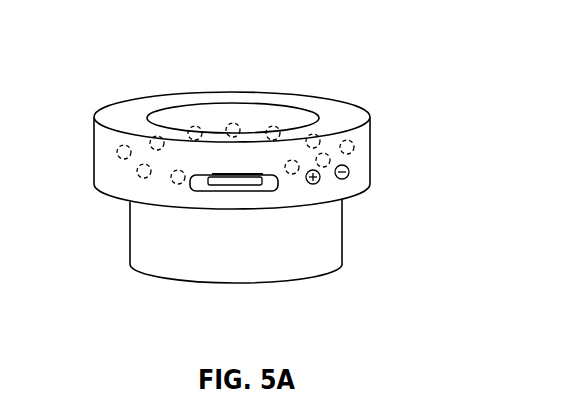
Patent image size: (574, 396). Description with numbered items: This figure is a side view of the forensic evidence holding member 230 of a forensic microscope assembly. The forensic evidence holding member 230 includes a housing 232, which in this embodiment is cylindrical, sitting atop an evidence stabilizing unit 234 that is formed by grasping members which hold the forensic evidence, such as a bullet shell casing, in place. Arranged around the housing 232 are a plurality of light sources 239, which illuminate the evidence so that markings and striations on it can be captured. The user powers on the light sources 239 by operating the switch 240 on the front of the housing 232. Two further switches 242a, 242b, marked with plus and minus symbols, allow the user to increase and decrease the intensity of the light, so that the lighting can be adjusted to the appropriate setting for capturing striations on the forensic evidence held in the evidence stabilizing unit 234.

The forensic evidence holding member 230 is at (113, 73).
The housing 232 is at (258, 168).
The evidence stabilizing unit 234 is at (258, 258).
The light sources 239 is at (117, 158).
The switch 240 is at (235, 177).
The increase intensity switch 242a is at (320, 183).
The decrease intensity switch 242b is at (349, 166).